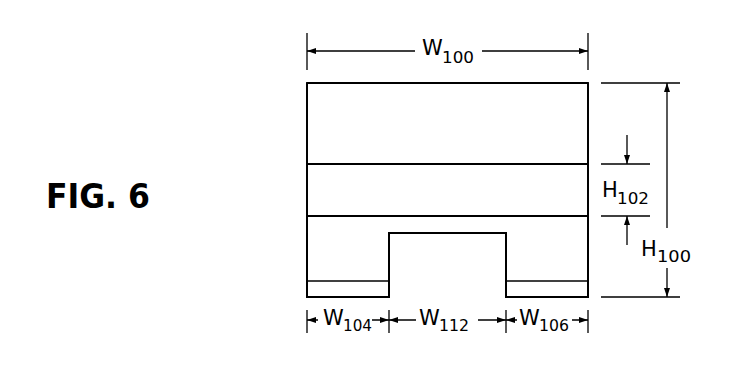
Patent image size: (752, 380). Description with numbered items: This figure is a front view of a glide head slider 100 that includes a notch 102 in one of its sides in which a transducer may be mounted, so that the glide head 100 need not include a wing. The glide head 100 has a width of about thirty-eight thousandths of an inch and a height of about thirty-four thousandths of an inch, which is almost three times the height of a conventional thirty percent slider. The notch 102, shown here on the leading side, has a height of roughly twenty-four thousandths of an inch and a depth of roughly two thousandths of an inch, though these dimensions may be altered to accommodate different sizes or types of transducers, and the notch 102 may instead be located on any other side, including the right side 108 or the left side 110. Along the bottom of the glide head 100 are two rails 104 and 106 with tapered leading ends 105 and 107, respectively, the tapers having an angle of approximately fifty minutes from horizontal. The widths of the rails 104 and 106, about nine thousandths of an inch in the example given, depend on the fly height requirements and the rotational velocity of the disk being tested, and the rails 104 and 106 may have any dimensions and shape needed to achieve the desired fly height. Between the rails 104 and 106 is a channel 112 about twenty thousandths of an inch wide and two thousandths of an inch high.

The glide head slider 100 is at (614, 55).
The notch 102 is at (467, 199).
The rail 104 is at (322, 236).
The tapered leading end 105 is at (345, 290).
The rail 106 is at (588, 266).
The tapered leading end 107 is at (545, 290).
The right side 108 is at (307, 115).
The left side 110 is at (590, 108).
The channel 112 is at (450, 246).